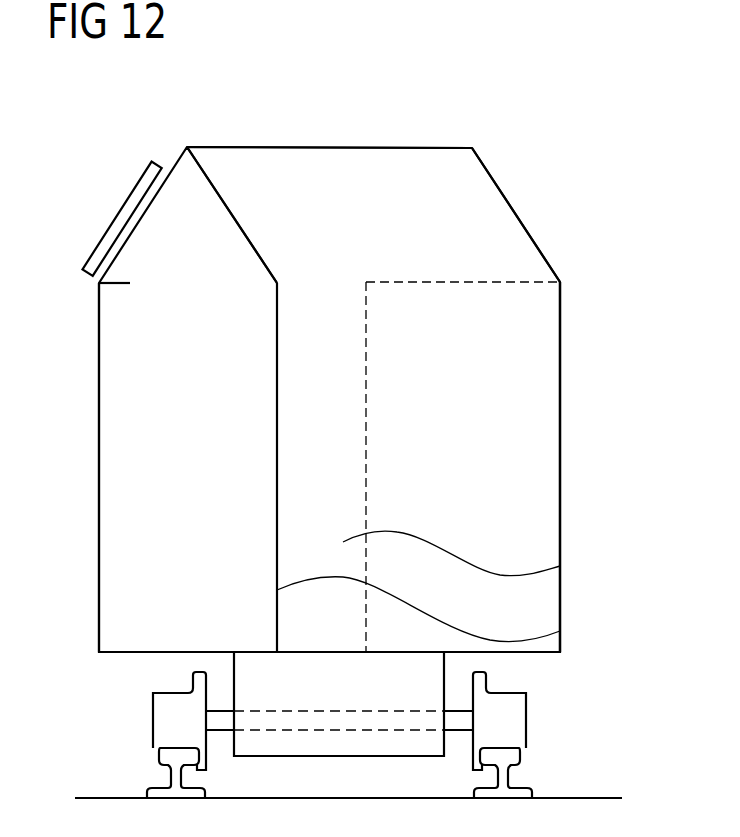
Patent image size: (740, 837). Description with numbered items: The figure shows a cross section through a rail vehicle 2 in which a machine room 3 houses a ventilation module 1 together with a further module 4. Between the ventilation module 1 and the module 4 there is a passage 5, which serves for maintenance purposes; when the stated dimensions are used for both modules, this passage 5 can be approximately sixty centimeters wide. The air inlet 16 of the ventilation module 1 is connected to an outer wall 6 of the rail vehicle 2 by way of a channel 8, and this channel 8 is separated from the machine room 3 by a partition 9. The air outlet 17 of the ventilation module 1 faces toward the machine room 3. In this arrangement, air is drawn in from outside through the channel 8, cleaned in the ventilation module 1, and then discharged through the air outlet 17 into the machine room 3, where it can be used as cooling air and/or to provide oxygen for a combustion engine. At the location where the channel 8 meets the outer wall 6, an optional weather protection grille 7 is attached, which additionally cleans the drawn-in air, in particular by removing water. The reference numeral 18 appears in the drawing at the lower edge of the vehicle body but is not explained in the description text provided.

The ventilation module 1 is at (108, 498).
The rail vehicle 2 is at (358, 437).
The machine room 3 is at (440, 158).
The further module 4 is at (548, 518).
The passage 5 is at (560, 566).
The outer wall 6 is at (342, 147).
The weather protection grille 7 is at (135, 205).
The channel 8 is at (193, 172).
The partition 9 is at (210, 177).
The air inlet 16 is at (128, 282).
The air outlet 17 is at (560, 631).
The underframe 18 is at (127, 652).